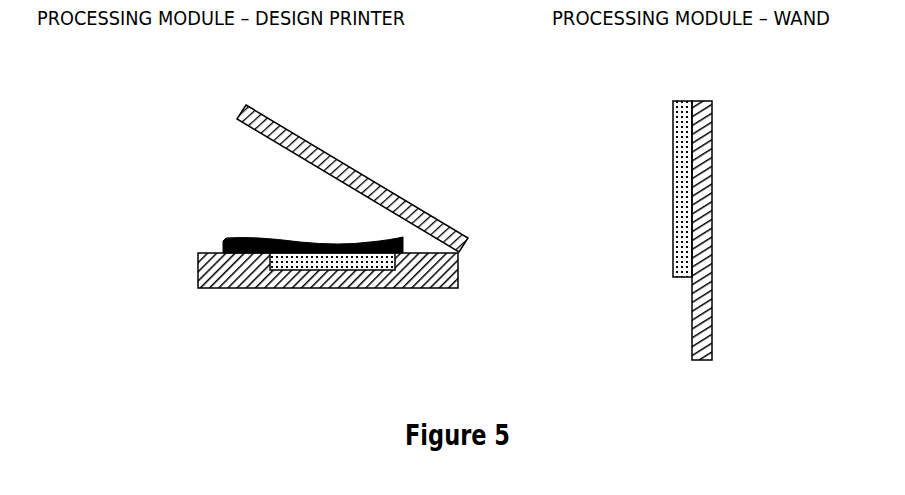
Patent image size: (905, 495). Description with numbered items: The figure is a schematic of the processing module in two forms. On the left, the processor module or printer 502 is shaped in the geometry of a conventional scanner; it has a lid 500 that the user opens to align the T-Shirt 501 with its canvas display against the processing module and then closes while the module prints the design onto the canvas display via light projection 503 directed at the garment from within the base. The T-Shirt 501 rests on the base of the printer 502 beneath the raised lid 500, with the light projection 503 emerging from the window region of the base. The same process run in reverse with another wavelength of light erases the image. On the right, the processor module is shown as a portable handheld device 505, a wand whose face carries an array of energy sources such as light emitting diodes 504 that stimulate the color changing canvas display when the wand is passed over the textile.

The processor module lid 500 is at (243, 111).
The T-Shirt with canvas display 501 is at (226, 244).
The processor module printer 502 is at (198, 275).
The light projection 503 is at (329, 272).
The light emitting diodes 504 is at (673, 128).
The portable handheld device 505 is at (692, 308).